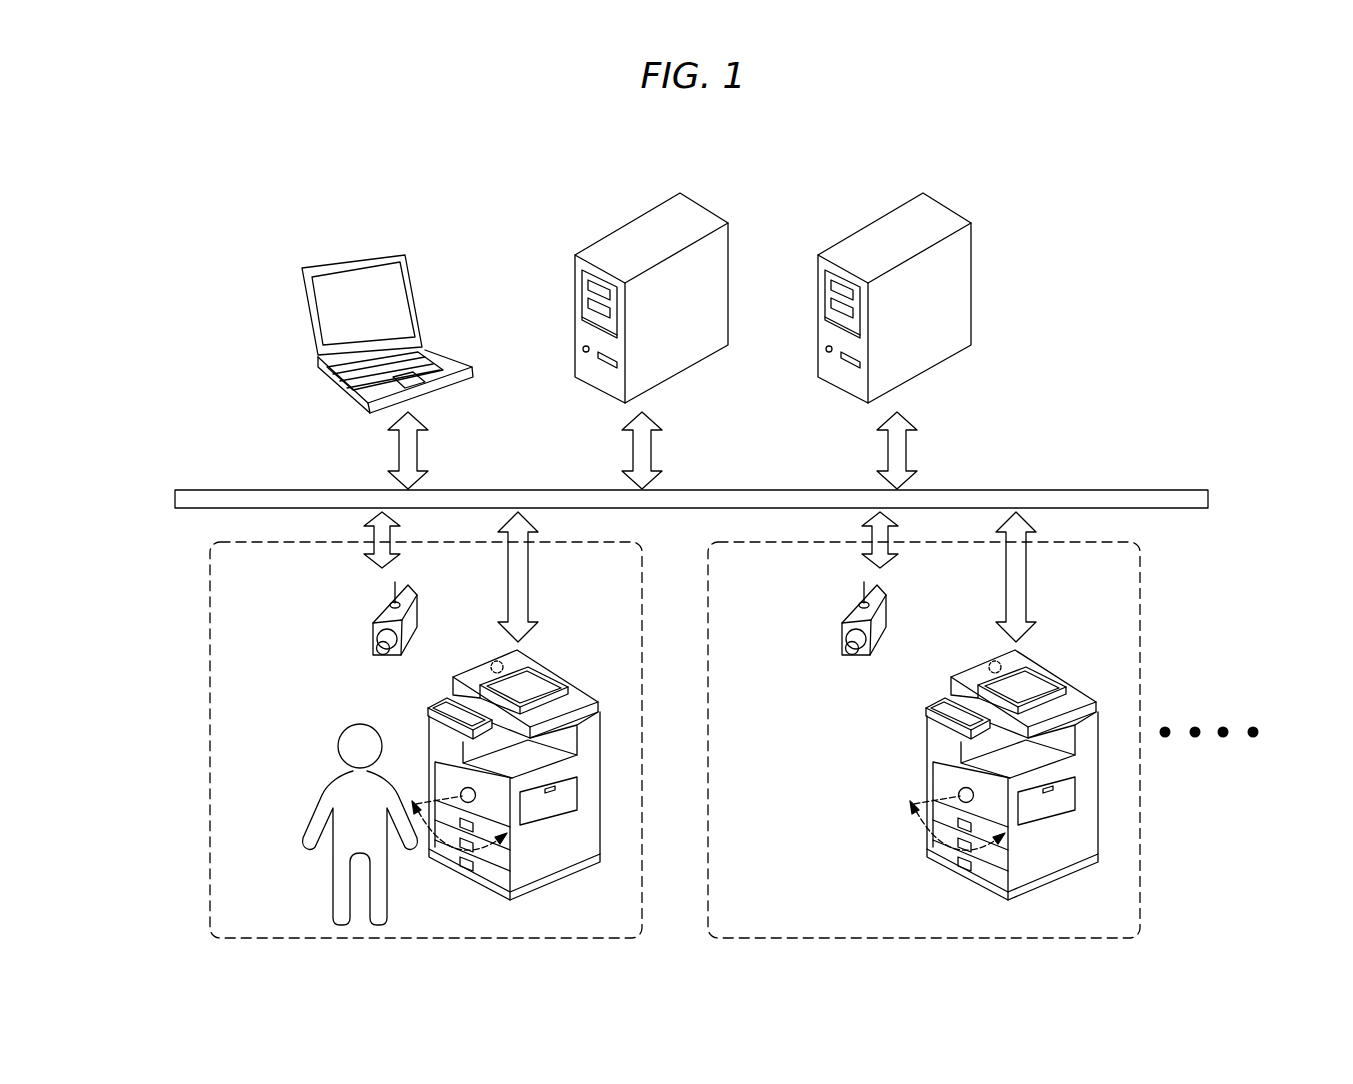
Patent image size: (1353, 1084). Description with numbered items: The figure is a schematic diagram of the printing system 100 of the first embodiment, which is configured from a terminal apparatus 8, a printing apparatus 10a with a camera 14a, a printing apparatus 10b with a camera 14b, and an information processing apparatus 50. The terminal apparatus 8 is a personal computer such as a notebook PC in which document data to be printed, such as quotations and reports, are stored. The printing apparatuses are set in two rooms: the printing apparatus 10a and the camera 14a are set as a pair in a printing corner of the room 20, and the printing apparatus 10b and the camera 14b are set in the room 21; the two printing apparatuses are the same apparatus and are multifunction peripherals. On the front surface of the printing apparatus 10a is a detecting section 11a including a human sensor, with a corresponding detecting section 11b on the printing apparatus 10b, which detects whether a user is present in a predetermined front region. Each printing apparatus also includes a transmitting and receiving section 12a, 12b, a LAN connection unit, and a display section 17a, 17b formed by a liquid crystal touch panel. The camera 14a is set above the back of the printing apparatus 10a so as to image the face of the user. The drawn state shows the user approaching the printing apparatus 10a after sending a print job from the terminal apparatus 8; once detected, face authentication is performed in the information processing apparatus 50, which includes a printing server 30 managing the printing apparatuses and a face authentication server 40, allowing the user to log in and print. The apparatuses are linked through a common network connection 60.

The terminal apparatus 8 is at (351, 256).
The printing apparatus 10a is at (499, 754).
The printing apparatus 10b is at (978, 754).
The detecting section 11a is at (478, 796).
The detecting section 11b is at (916, 785).
The transmitting and receiving section 12a is at (496, 660).
The transmitting and receiving section 12b is at (974, 640).
The camera 14a is at (376, 611).
The camera 14b is at (827, 618).
The display section 17a is at (448, 707).
The display section 17b is at (943, 697).
The room 20 is at (210, 603).
The room 21 is at (1142, 623).
The printing server 30 is at (690, 216).
The face authentication server 40 is at (894, 272).
The information processing apparatus 50 is at (955, 141).
The network 60 is at (1179, 490).
The printing system 100 is at (1142, 208).